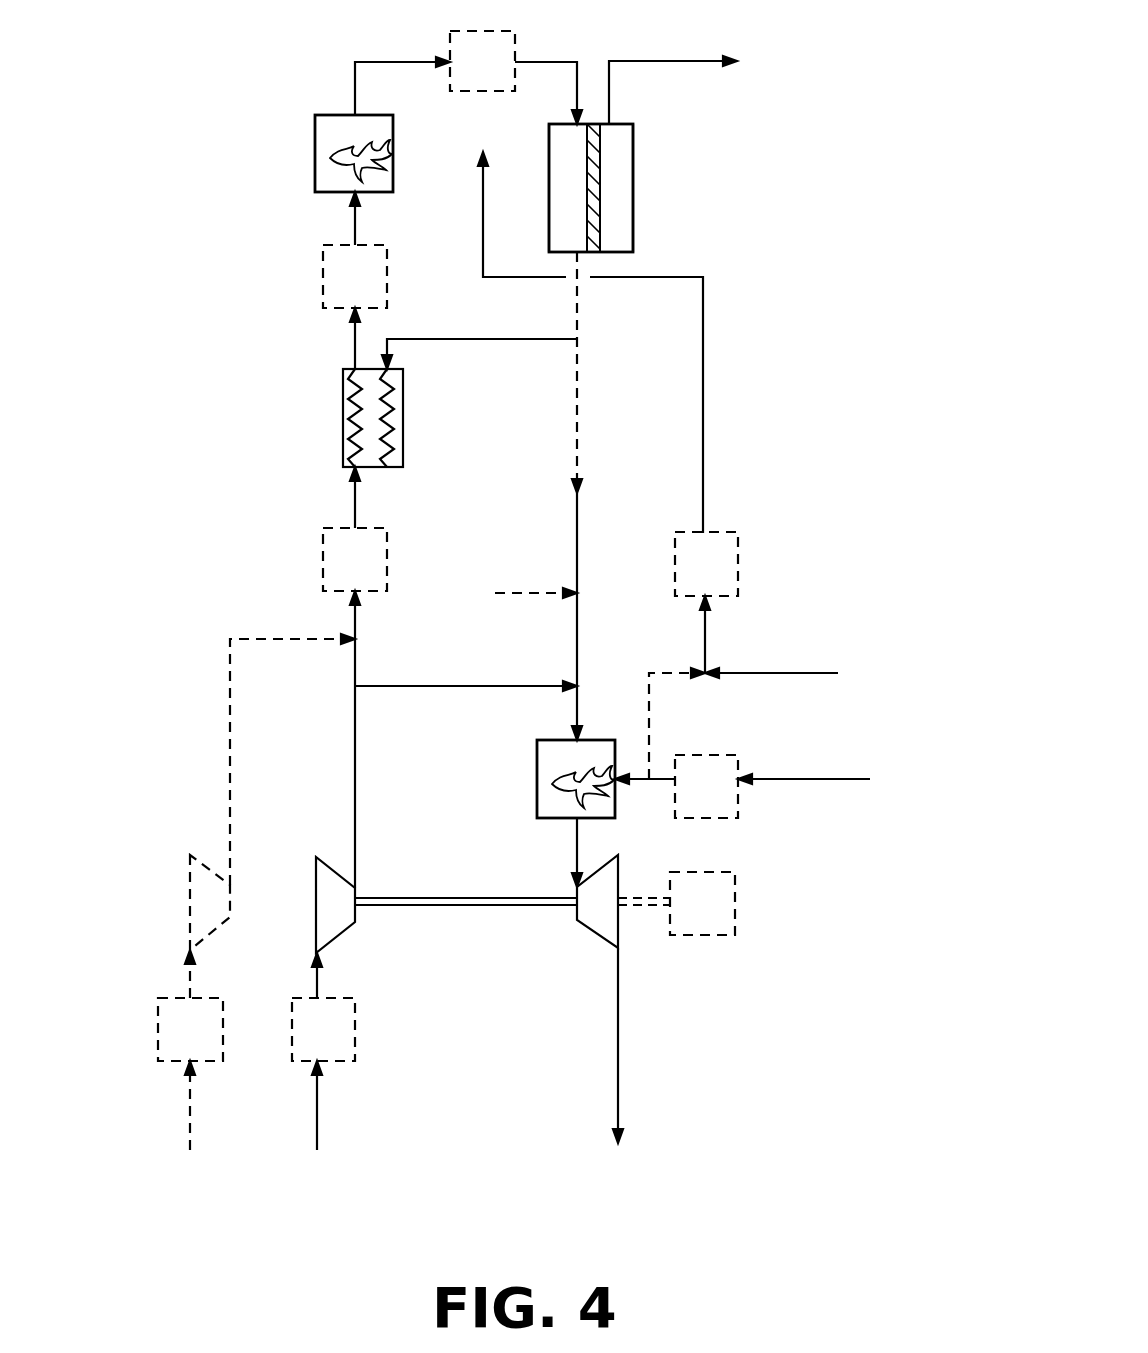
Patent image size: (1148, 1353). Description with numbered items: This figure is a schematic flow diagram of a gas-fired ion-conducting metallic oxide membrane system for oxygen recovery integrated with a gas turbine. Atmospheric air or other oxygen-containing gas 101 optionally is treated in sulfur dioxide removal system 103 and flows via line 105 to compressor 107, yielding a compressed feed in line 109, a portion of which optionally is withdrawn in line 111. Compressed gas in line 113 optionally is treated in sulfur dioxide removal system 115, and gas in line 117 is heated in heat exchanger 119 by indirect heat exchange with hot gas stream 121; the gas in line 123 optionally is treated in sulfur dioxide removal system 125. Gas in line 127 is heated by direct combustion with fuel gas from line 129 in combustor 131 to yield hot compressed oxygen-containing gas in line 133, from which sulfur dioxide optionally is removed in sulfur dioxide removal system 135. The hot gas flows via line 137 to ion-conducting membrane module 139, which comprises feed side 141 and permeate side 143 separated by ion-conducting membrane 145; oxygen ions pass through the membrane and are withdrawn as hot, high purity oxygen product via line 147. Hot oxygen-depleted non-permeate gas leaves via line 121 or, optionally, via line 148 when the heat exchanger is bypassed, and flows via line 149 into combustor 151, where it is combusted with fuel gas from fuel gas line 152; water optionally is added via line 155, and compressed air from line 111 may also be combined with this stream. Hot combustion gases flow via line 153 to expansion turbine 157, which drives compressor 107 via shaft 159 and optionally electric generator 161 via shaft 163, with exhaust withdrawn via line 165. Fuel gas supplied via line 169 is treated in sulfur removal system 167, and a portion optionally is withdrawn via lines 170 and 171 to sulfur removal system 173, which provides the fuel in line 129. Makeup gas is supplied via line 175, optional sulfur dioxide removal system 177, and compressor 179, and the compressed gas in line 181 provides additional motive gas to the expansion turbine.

The atmospheric air or other oxygen-containing gas 101 is at (317, 1095).
The sulfur dioxide removal system 103 is at (355, 1035).
The line 105 is at (317, 975).
The compressor 107 is at (316, 865).
The line 109 is at (355, 781).
The line 111 is at (438, 688).
The line 113 is at (355, 657).
The sulfur dioxide removal system 115 is at (387, 550).
The line 117 is at (355, 500).
The heat exchanger 119 is at (343, 418).
The hot gas stream 121 is at (468, 344).
The line 123 is at (355, 343).
The sulfur dioxide removal system 125 is at (323, 265).
The line 127 is at (355, 217).
The line 129 is at (483, 205).
The combustor 131 is at (315, 153).
The line 133 is at (355, 75).
The sulfur dioxide removal system 135 is at (455, 91).
The line 137 is at (557, 62).
The ion-conducting membrane module 139 is at (609, 176).
The feed side 141 is at (561, 155).
The permeate side 143 is at (613, 180).
The ion-conducting membrane 145 is at (600, 228).
The line 147 is at (634, 61).
The line 148 is at (577, 372).
The line 149 is at (577, 532).
The combustor 151 is at (537, 776).
The fuel gas line 152 is at (643, 782).
The line 153 is at (577, 843).
The line 155 is at (515, 595).
The expansion turbine 157 is at (588, 928).
The shaft 159 is at (438, 898).
The electric generator 161 is at (735, 895).
The shaft 163 is at (653, 910).
The line 165 is at (618, 1010).
The sulfur removal system 167 is at (706, 755).
The line 169 is at (788, 779).
The line 170 is at (647, 698).
The line 171 is at (705, 638).
The sulfur removal system 173 is at (738, 551).
The line 175 is at (190, 1098).
The sulfur dioxide removal system 177 is at (158, 1018).
The compressor 179 is at (190, 902).
The line 181 is at (230, 733).